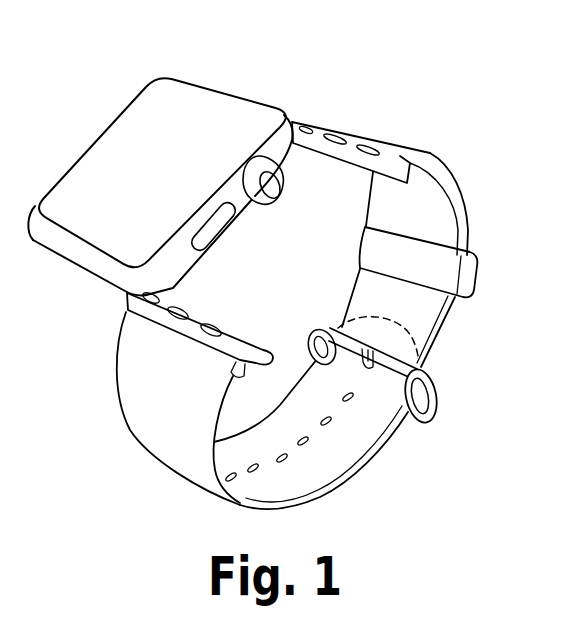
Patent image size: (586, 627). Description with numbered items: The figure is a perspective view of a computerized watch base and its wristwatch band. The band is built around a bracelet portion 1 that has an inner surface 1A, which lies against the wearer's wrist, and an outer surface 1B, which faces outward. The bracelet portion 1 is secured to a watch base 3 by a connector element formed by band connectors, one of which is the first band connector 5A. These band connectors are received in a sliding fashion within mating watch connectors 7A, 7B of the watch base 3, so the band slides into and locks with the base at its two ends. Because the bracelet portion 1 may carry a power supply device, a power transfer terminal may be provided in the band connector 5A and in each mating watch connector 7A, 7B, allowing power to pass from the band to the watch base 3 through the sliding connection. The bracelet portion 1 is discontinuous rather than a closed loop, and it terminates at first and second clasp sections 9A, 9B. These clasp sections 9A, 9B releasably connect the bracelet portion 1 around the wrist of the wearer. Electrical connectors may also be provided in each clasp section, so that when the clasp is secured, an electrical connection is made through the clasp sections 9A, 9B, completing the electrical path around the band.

The bracelet portion 1 is at (272, 274).
The inner surface 1A is at (432, 219).
The outer surface 1B is at (182, 385).
The watch base 3 is at (140, 160).
The first band connector 5A is at (347, 129).
The first mating watch connector 7A is at (267, 112).
The second mating watch connector 7B is at (78, 264).
The first clasp section 9A is at (429, 409).
The second clasp section 9B is at (434, 358).